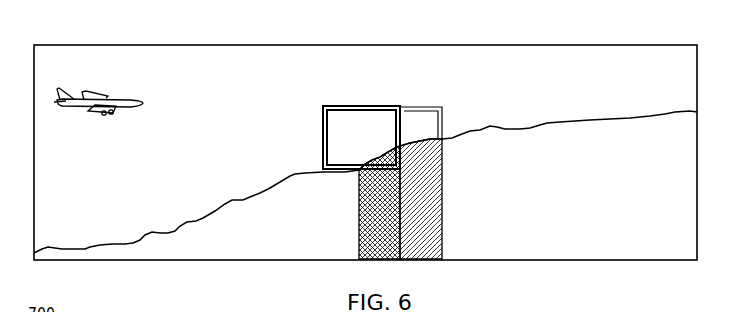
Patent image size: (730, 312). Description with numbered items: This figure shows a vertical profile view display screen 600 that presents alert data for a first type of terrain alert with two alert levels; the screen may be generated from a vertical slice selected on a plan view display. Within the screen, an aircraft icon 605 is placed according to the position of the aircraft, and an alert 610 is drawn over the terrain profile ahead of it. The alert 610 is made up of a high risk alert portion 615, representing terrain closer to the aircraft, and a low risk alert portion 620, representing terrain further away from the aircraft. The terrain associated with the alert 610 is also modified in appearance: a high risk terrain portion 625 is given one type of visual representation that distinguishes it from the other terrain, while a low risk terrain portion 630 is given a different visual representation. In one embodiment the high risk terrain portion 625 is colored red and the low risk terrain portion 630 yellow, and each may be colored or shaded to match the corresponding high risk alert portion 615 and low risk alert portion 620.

The vertical profile view display screen 600 is at (80, 30).
The aircraft icon 605 is at (123, 100).
The alert 610 is at (375, 115).
The high risk alert portion 615 is at (330, 106).
The low risk alert portion 620 is at (432, 107).
The high risk terrain portion 625 is at (369, 259).
The low risk terrain portion 630 is at (427, 257).